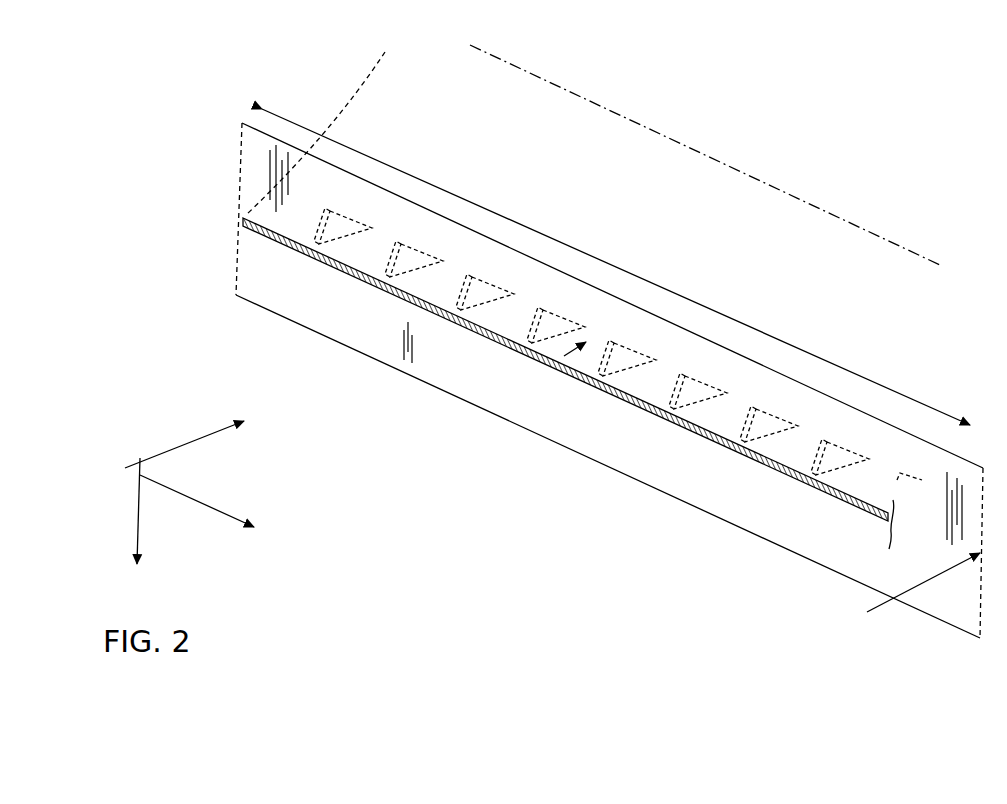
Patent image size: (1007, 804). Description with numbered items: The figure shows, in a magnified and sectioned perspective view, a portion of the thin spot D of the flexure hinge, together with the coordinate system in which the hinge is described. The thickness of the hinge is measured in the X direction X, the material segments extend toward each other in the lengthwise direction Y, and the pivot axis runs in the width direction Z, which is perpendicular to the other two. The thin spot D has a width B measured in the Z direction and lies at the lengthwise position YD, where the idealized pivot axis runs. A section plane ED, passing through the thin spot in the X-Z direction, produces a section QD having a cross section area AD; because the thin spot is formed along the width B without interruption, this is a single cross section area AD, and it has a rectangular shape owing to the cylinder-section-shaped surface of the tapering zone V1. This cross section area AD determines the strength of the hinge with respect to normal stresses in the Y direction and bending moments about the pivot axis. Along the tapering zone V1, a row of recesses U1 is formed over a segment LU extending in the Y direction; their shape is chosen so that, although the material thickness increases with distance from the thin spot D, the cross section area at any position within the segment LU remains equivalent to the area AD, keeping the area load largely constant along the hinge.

The tapering section V1 is at (403, 74).
The recess U1 is at (345, 232).
The width B is at (604, 261).
The section QD is at (298, 246).
The cross section area AD is at (565, 369).
The thin spot D is at (495, 335).
The segment LU is at (577, 357).
The section plane ED is at (756, 506).
The lengthwise position of the thin spot YD is at (904, 606).
The X direction X is at (120, 516).
The lengthwise direction Y is at (184, 427).
The width direction Z is at (197, 525).